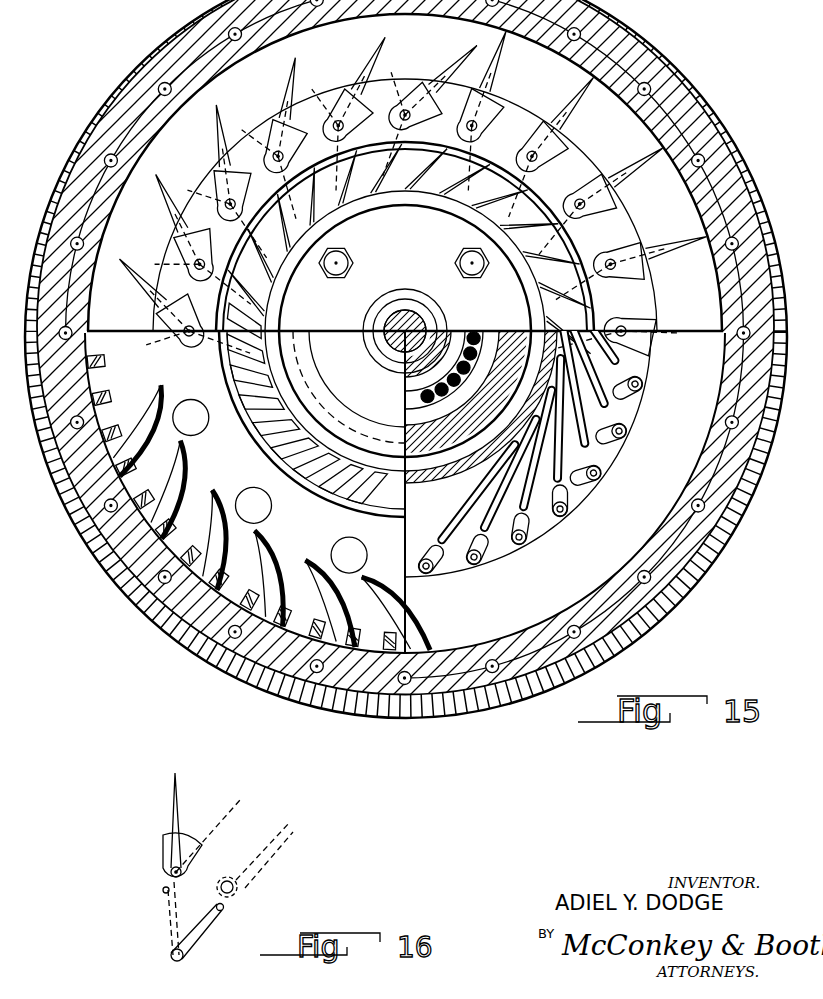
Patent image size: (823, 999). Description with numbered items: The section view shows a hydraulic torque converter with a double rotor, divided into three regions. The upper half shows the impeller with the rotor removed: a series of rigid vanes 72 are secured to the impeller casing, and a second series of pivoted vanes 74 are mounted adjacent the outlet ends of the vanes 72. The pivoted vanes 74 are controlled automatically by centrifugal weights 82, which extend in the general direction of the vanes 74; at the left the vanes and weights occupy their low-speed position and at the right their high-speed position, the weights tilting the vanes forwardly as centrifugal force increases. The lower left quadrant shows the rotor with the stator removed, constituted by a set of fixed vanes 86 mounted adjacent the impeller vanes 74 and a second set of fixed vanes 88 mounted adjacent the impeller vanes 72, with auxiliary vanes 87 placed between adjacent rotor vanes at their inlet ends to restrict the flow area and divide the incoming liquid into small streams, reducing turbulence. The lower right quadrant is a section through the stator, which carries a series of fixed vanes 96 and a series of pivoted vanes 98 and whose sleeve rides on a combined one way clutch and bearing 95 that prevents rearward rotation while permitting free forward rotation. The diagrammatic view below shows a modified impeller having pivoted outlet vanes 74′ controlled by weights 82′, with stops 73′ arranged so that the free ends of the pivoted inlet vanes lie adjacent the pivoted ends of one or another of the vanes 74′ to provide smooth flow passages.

In FIG. 15, the rigid impeller vanes 72 is at (256, 252).
In FIG. 16, the rigid impeller vanes 72 is at (203, 927).
In FIG. 15, the pivoted impeller vanes 74 is at (157, 300).
In FIG. 15, the centrifugal weights 82 is at (181, 300).
In FIG. 15, the first set of fixed rotor vanes 86 is at (321, 582).
In FIG. 15, the auxiliary vanes 87 is at (198, 520).
In FIG. 15, the second set of fixed rotor vanes 88 is at (338, 447).
In FIG. 15, the combined one way clutch and bearing 95 is at (473, 338).
In FIG. 15, the fixed stator vanes 96 is at (579, 446).
In FIG. 15, the pivoted stator vanes 98 is at (621, 392).
In FIG. 16, the pivoted outlet vanes 74′ is at (178, 808).
In FIG. 16, the weights 82′ is at (167, 852).
In FIG. 16, the stops 73′ is at (163, 891).